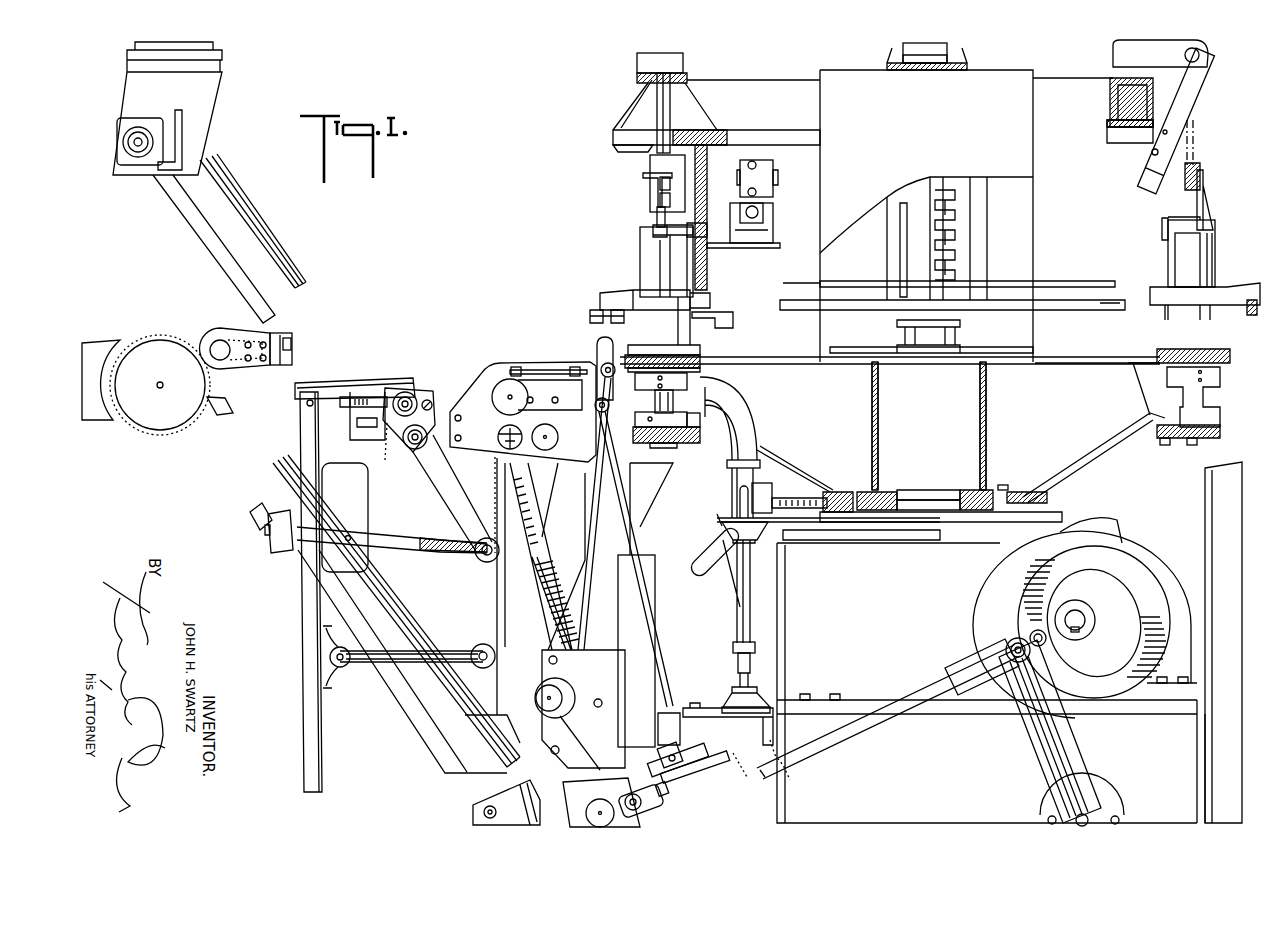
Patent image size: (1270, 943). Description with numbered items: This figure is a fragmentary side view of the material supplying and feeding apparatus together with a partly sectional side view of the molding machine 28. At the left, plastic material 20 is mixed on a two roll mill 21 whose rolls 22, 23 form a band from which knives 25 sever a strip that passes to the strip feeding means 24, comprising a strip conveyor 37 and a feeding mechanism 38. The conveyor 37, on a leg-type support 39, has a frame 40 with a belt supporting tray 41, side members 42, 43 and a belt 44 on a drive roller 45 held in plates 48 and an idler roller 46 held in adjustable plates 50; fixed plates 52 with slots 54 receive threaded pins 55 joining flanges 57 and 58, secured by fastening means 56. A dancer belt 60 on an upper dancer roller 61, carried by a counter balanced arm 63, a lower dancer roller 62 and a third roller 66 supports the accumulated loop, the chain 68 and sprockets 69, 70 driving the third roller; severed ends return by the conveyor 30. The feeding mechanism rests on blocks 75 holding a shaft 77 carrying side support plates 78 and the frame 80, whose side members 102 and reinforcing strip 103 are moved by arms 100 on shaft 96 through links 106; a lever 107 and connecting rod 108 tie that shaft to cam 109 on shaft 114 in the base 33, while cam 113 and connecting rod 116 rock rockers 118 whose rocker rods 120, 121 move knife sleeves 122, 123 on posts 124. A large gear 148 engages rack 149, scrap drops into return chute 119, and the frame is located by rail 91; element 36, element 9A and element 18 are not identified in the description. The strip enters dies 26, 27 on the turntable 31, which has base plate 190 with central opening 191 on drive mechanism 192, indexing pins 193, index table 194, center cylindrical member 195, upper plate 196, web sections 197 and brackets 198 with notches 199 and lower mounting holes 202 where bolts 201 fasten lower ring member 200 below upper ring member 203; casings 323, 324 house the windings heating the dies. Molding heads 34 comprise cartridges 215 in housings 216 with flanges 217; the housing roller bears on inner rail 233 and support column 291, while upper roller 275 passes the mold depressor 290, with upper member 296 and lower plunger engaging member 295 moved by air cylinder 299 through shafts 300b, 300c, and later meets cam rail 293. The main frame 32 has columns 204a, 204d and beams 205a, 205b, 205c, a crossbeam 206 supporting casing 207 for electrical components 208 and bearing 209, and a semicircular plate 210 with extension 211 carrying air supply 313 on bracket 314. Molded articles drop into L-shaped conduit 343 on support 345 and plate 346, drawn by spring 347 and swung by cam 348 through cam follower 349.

The plastic material 20 is at (120, 340).
The two roll mill 21 is at (128, 432).
The roll 22 is at (166, 418).
The roll 23 is at (93, 415).
The knives 25 is at (223, 415).
The plates 48 is at (242, 332).
The side member 42 is at (295, 325).
The belt 44 is at (283, 366).
The belt supporting tray 41 is at (290, 347).
The side member 43 is at (292, 352).
The first roller 45 is at (232, 368).
The strip conveyor 37 is at (284, 408).
The flanges 58 is at (368, 390).
The flanges 57 is at (400, 392).
The threaded pins 55 is at (375, 398).
The plates 50 is at (409, 394).
The second roller 46 is at (430, 395).
The fastening means 56 is at (436, 395).
The sprocket 69 is at (432, 405).
The frame 40 is at (327, 420).
The slots 54 is at (368, 428).
The fixed plates 52 is at (387, 428).
The chain 68 is at (410, 444).
The third roller 66 is at (420, 450).
The sprocket 70 is at (412, 452).
The dancer belt 60 is at (444, 500).
The counter balanced arm 63 is at (393, 540).
The upper dancer roller 61 is at (486, 538).
The leg-type support 39 is at (284, 584).
The upright 36 is at (304, 606).
The conveyor 30 is at (307, 222).
The dancer roller 62 is at (483, 643).
The strip feeding means 24 is at (467, 318).
The side members 102 is at (495, 362).
The rack 149 is at (532, 367).
The feeding mechanism 38 is at (576, 354).
The large gear 148 is at (515, 402).
The sleeves 123 is at (600, 406).
The reinforcing strip 103 is at (473, 423).
The links 106 is at (498, 438).
The rocker rods 121 is at (595, 513).
The arms 100 is at (528, 542).
The feeding mechanism frame 80 is at (621, 533).
The return chute 119 is at (651, 487).
The rocker rods 120 is at (632, 535).
The clamp 9A is at (590, 313).
The posts 124 is at (597, 343).
The sleeves 122 is at (613, 352).
The rail 91 is at (602, 306).
The die 26 is at (655, 395).
The die 27 is at (660, 407).
The metal casing 323 is at (680, 381).
The metal casing 324 is at (690, 413).
The flat ring member 200 is at (690, 445).
The flange 217 is at (700, 352).
The upper ring member 203 is at (703, 358).
The support column 291 is at (733, 316).
The L-shaped conduit 343 is at (732, 478).
The plate 346 is at (717, 519).
The support 345 is at (742, 610).
The cam follower 349 is at (787, 490).
The spring 347 is at (812, 540).
The stationary base 33 is at (899, 586).
The vertical tubular column 204a is at (643, 630).
The side support plates 78 is at (598, 682).
The shaft 96 is at (557, 700).
The lever 107 is at (594, 747).
The plate 18 is at (592, 805).
The shaft 77 is at (614, 815).
The blocks 75 is at (648, 804).
The rockers 118 is at (676, 777).
The connecting rod 108 is at (708, 771).
The connecting rod 116 is at (736, 741).
The actuating air cylinder 299 is at (638, 58).
The center shaft 300b is at (658, 100).
The horizontal tubular beam 205a is at (697, 108).
The semicircular plate 210 is at (717, 130).
The mold depressor 290 is at (632, 155).
The end shaft 300c is at (650, 162).
The upper member 296 is at (655, 176).
The upper roller 275 is at (660, 184).
The cam rail 293 is at (660, 200).
The lower plunger engaging member 295 is at (653, 228).
The molding head 34 is at (633, 241).
The cartridge 215 is at (640, 262).
The housing 216 is at (663, 297).
The curved vertical extension 211 is at (708, 157).
The air supply 313 is at (762, 173).
The bracket 314 is at (777, 245).
The rail 233 is at (1058, 279).
The horizontal tubular beam 205b is at (782, 87).
The stationary tubular frame 32 is at (800, 87).
The bearing 209 is at (947, 51).
The intermediate crossbeam 206 is at (967, 63).
The casing 207 is at (1027, 92).
The housing 205c is at (1107, 80).
The electrical components 208 is at (960, 248).
The indexing pins 193 is at (853, 490).
The vertical drive mechanism 192 is at (907, 497).
The central opening 191 is at (930, 487).
The circular base plate 190 is at (992, 490).
The center cylindrical member 195 is at (988, 393).
The turntable 31 is at (940, 422).
The upper horizontal circular plate 196 is at (1083, 363).
The molding head mounting brackets 198 is at (1137, 363).
The lower mounting holes 202 is at (1157, 415).
The web sections 197 is at (1097, 440).
The semicircular notch 199 is at (1203, 397).
The bolts 201 is at (1187, 445).
The cam 348 is at (1050, 500).
The index table 194 is at (1062, 516).
The cam 113 is at (1100, 532).
The vertical tubular column 204d is at (1205, 538).
The cam 109 is at (977, 600).
The shaft 114 is at (1080, 618).
The molding machine 28 is at (542, 136).